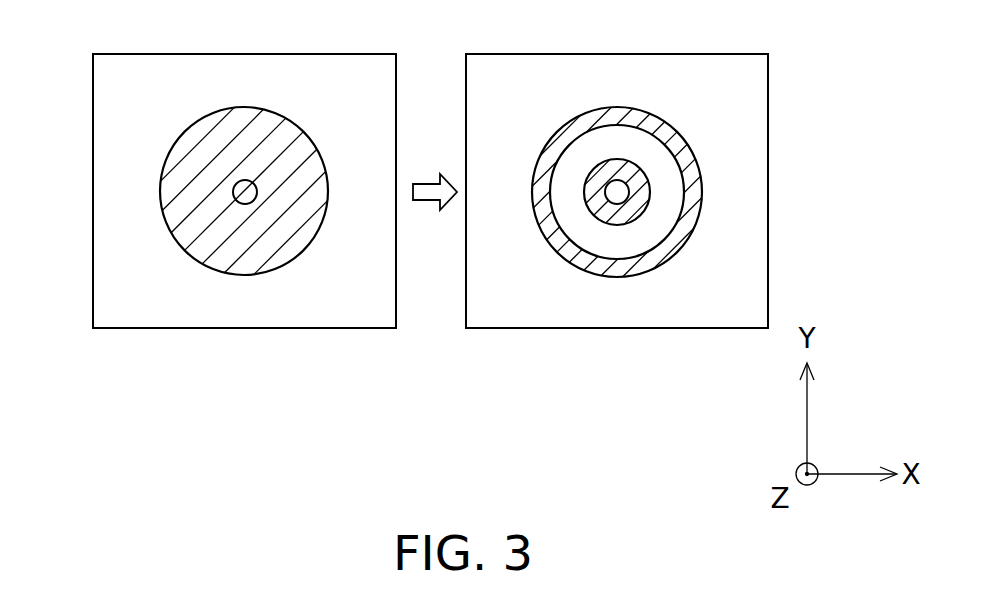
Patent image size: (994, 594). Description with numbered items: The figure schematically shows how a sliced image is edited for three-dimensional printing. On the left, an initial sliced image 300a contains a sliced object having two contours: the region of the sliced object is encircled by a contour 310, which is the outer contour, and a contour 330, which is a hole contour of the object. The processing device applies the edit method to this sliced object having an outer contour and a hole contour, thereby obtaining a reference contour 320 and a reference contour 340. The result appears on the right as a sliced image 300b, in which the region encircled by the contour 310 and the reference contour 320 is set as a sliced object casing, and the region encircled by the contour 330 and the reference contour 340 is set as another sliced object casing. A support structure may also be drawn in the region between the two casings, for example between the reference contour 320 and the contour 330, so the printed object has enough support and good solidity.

The initial sliced image 300a is at (313, 54).
The sliced image 300b is at (687, 54).
The contour 310 is at (192, 124).
The reference contour 320 is at (668, 143).
The contour 330 is at (650, 192).
The reference contour 340 is at (233, 190).